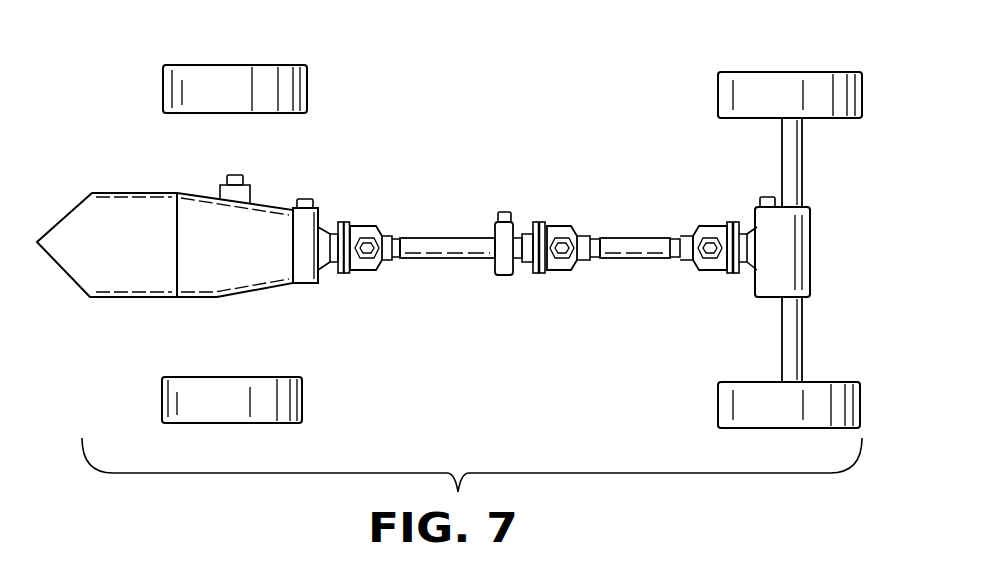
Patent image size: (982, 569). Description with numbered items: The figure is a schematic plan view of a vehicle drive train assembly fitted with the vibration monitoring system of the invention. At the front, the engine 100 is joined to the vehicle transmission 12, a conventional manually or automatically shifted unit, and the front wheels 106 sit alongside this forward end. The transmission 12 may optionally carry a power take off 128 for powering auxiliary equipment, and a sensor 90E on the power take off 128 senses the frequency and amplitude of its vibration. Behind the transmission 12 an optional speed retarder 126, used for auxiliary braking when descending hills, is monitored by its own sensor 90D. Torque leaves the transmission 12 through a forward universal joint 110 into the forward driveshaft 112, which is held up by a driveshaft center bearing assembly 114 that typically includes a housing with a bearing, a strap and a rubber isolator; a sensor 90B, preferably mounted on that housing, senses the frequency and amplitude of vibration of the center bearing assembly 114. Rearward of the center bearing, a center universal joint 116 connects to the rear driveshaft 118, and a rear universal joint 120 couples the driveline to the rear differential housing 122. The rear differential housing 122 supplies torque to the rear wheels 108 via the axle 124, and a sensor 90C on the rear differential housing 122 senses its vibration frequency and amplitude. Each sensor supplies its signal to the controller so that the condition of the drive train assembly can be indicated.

The engine 100 is at (127, 298).
The vehicle transmission 12 is at (247, 295).
The power take off 128 is at (218, 195).
The sensor 90E is at (232, 173).
The speed retarder 126 is at (307, 283).
The sensor 90D is at (308, 199).
The forward universal joint 110 is at (382, 228).
The forward driveshaft 112 is at (430, 256).
The driveshaft center bearing assembly 114 is at (503, 277).
The sensor 90B is at (507, 213).
The center universal joint 116 is at (576, 228).
The rear driveshaft 118 is at (620, 260).
The rear universal joint 120 is at (700, 275).
The rear differential housing 122 is at (812, 255).
The sensor 90C is at (763, 197).
The axle 124 is at (797, 160).
The rear wheels 108 is at (722, 95).
The front wheels 106 is at (307, 87).